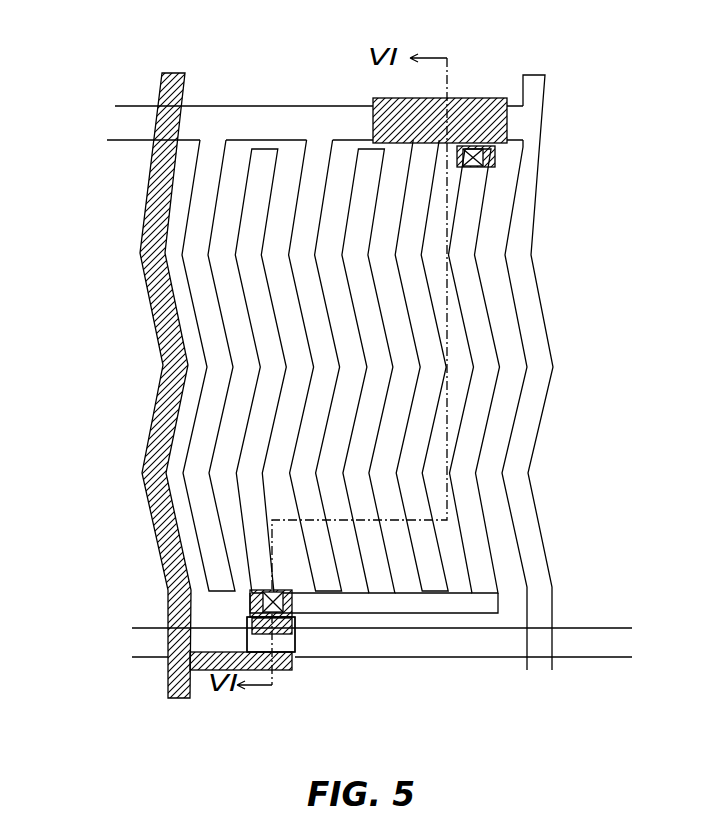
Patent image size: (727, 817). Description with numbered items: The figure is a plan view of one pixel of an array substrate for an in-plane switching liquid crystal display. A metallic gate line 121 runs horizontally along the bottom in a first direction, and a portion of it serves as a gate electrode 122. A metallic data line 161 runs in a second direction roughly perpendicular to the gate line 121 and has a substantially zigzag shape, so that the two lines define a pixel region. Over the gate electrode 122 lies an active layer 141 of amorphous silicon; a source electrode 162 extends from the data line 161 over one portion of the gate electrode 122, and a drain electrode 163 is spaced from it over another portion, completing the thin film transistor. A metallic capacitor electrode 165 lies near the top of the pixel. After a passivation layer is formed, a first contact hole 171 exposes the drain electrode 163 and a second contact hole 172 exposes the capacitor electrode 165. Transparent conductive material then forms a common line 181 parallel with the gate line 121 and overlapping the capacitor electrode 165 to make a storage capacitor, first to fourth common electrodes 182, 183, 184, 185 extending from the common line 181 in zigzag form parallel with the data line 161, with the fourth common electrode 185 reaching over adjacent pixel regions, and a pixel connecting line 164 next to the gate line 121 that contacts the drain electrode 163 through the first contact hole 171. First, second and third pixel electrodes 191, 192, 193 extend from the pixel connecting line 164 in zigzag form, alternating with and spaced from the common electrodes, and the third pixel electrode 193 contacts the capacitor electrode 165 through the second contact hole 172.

The gate line 121 is at (408, 658).
The gate electrode 122 is at (288, 640).
The active layer 141 is at (293, 638).
The data line 161 is at (148, 212).
The source electrode 162 is at (283, 672).
The drain electrode 163 is at (268, 652).
The pixel connecting line 164 is at (465, 615).
The capacitor electrode 165 is at (493, 97).
The first contact hole 171 is at (253, 602).
The second contact hole 172 is at (480, 147).
The common line 181 is at (252, 107).
The first common electrode 182 is at (192, 299).
The second common electrode 183 is at (300, 438).
The third common electrode 184 is at (425, 273).
The fourth common electrode 185 is at (530, 458).
The first pixel electrode 191 is at (258, 392).
The second pixel electrode 192 is at (380, 330).
The third pixel electrode 193 is at (495, 397).